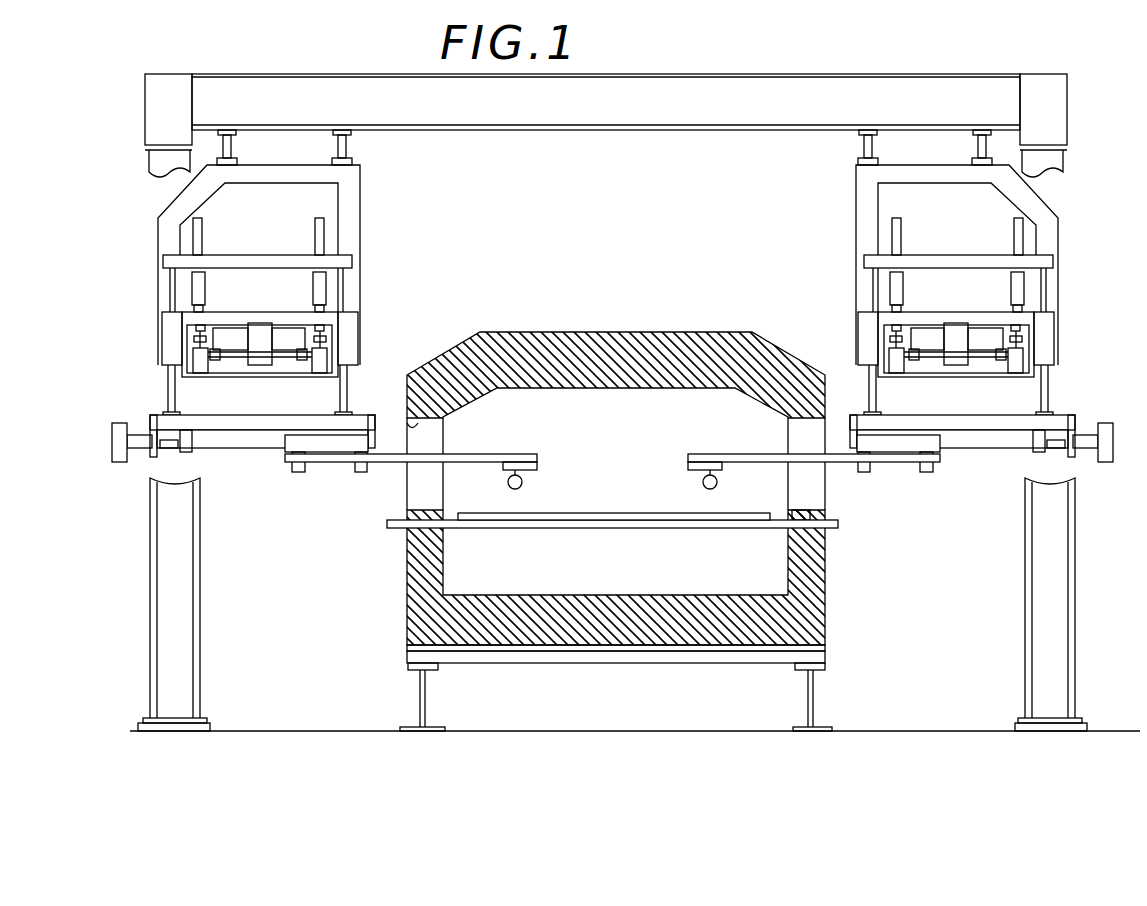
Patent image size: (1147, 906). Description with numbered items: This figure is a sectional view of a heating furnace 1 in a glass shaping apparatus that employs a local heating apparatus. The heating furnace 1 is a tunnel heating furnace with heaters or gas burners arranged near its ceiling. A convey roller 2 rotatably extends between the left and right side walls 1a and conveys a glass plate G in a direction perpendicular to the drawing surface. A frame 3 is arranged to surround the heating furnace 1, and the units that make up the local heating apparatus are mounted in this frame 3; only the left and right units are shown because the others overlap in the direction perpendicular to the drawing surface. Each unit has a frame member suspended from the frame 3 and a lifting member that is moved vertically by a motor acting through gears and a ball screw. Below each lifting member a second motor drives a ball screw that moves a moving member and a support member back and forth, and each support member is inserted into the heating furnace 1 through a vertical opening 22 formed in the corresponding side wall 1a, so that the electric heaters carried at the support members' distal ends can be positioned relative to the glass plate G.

The heating furnace 1 is at (600, 335).
The side walls 1a is at (407, 587).
The convey roller 2 is at (642, 530).
The frame 3 is at (918, 88).
The vertical opening 22 is at (405, 440).
The glass plate G is at (622, 513).